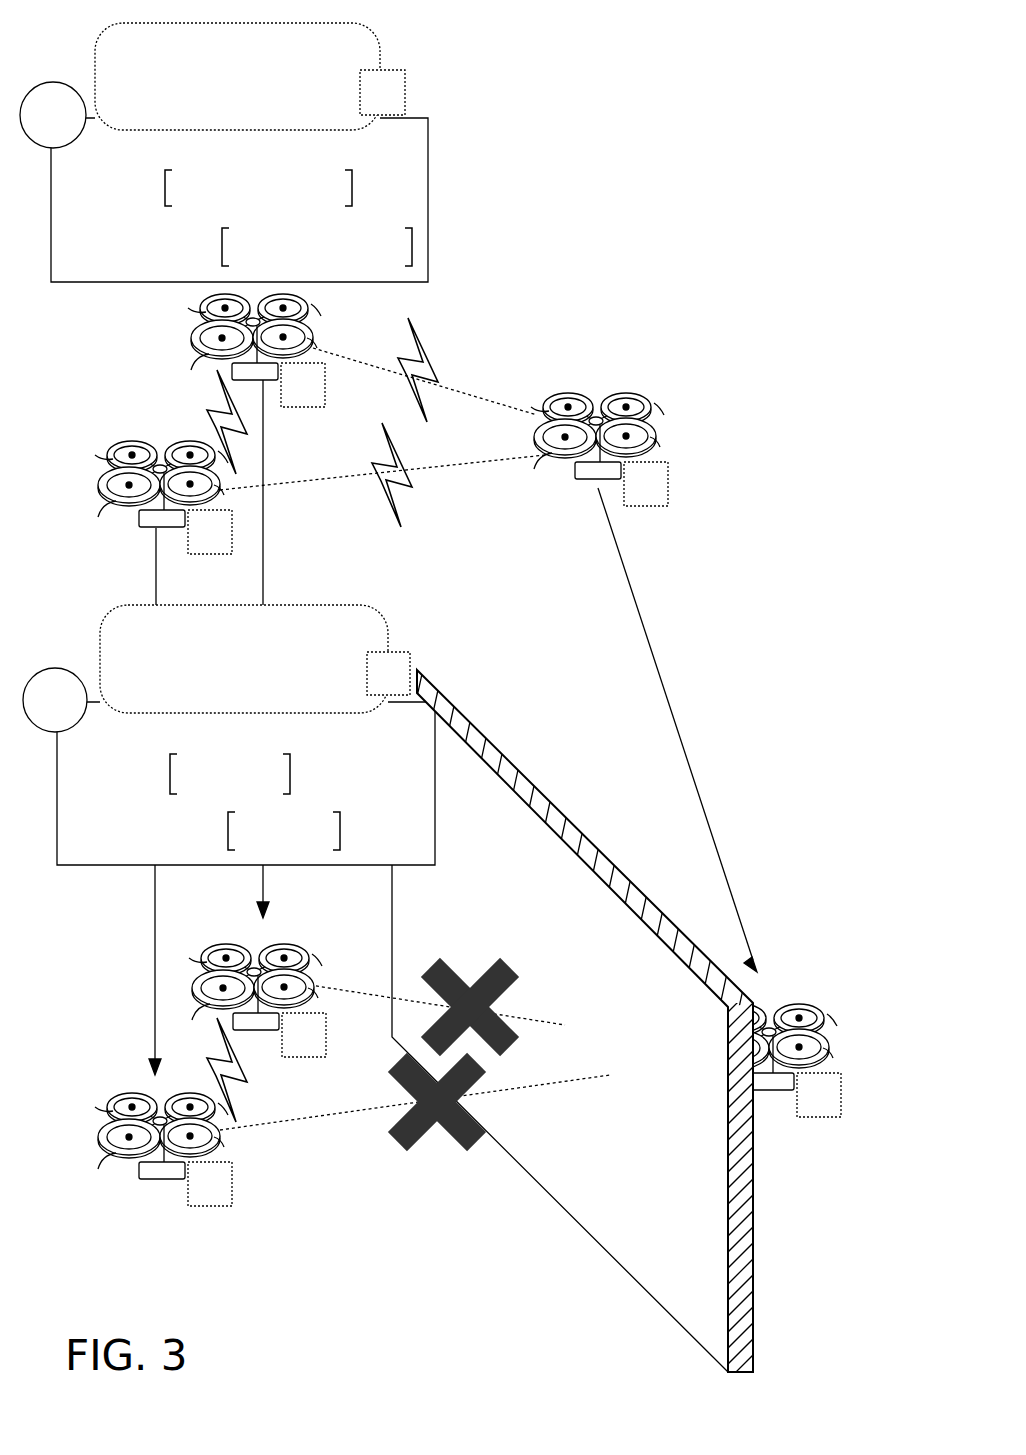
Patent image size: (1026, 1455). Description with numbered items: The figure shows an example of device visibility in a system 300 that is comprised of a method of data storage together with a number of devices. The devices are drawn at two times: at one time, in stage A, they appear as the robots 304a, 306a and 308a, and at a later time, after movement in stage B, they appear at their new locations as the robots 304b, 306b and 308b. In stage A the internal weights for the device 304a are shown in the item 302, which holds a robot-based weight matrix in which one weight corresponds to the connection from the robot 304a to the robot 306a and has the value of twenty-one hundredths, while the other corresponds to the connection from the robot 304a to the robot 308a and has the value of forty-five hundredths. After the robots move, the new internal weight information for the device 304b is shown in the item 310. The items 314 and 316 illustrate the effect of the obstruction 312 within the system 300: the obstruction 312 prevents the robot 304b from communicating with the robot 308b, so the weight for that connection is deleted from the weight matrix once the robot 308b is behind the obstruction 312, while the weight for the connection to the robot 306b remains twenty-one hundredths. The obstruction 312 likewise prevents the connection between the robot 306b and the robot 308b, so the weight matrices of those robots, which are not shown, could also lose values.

The system 300 is at (862, 69).
The item representing method of data storage 302 is at (100, 30).
The device at one time 304a is at (206, 308).
The device at one time 306a is at (110, 458).
The device at one time 308a is at (650, 406).
The item showing new internal weight information 310 is at (103, 612).
The device at a later time 304b is at (234, 945).
The device at a later time 306b is at (110, 1100).
The device at a later time 308b is at (822, 1013).
The obstruction 312 is at (530, 768).
The item illustrating effect of obstruction 314 is at (520, 972).
The item illustrating effect of obstruction 316 is at (484, 1128).